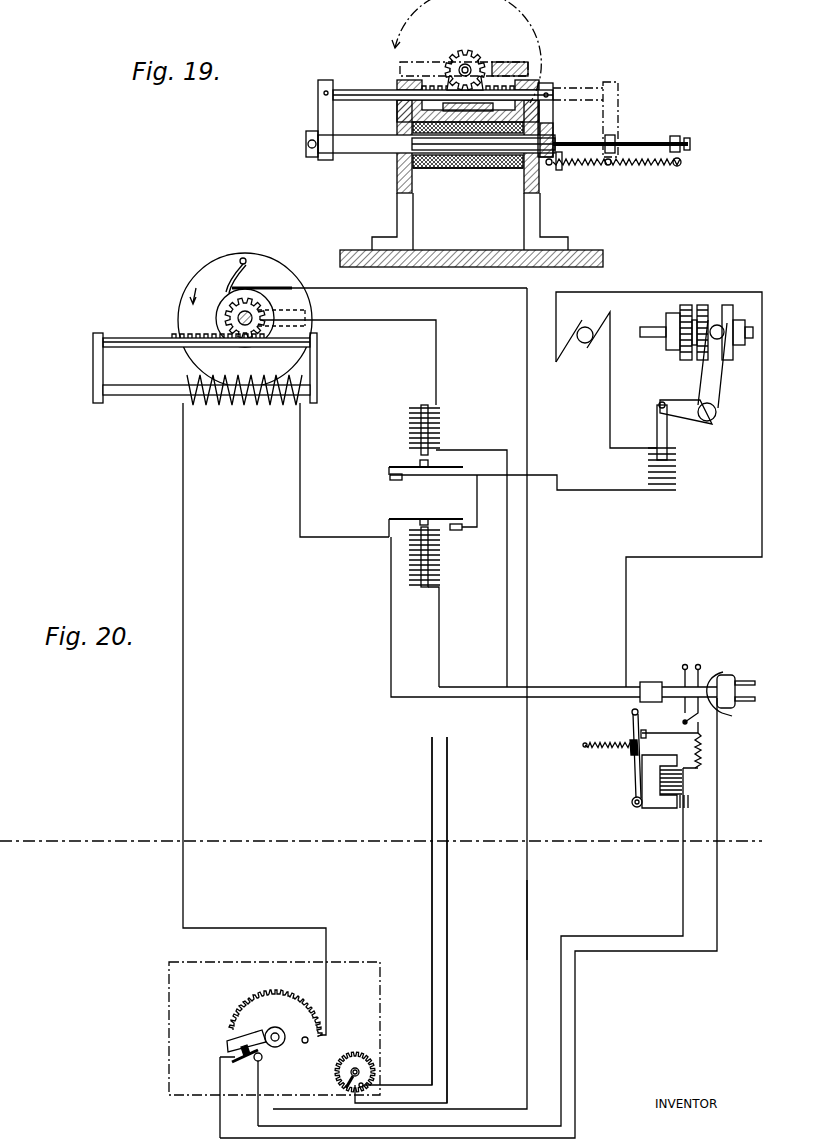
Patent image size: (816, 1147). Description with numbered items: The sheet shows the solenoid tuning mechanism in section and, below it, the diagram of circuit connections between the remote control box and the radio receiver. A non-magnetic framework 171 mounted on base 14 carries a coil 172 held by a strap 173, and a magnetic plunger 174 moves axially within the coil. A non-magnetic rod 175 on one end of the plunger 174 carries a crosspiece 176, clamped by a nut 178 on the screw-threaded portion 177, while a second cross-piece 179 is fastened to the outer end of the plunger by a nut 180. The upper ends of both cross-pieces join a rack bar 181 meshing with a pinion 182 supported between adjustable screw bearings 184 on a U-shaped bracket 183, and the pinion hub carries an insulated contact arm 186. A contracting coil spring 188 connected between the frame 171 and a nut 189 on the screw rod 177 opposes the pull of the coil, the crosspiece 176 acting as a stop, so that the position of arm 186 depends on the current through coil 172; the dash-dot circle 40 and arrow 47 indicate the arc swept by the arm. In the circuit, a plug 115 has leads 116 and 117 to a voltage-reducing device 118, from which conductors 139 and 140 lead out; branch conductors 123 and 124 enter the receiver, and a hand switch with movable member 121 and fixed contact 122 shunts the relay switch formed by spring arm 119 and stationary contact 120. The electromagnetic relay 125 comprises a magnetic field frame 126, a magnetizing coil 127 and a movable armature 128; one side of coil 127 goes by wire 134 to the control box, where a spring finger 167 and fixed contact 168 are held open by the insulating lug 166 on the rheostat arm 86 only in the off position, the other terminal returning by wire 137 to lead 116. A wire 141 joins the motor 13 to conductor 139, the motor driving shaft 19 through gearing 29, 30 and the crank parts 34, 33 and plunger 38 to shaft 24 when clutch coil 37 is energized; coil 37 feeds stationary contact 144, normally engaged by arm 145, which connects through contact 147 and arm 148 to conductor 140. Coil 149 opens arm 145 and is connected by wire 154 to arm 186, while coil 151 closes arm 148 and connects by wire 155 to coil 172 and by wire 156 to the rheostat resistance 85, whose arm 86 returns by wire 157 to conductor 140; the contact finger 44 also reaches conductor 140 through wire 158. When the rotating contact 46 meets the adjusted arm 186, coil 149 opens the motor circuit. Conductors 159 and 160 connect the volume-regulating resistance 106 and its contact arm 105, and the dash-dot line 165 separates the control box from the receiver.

In FIG. 19, the base 14 is at (493, 254).
In FIG. 19, the non-magnetic framework 171 is at (540, 84).
In FIG. 19, the coil 172 is at (470, 170).
In FIG. 20, the coil 172 is at (258, 405).
In FIG. 19, the strap 173 is at (430, 168).
In FIG. 19, the magnetic plunger 174 is at (358, 153).
In FIG. 20, the magnetic plunger 174 is at (148, 395).
In FIG. 19, the non-magnetic rod 175 is at (485, 170).
In FIG. 19, the crosspiece 176 is at (553, 117).
In FIG. 20, the crosspiece 176 is at (318, 371).
In FIG. 19, the screw-threaded portion 177 is at (592, 142).
In FIG. 19, the nut 178 is at (563, 165).
In FIG. 19, the second cross-piece 179 is at (318, 117).
In FIG. 20, the second cross-piece 179 is at (93, 377).
In FIG. 19, the nut 180 is at (310, 157).
In FIG. 19, the rack bar 181 is at (358, 88).
In FIG. 20, the rack bar 181 is at (120, 338).
In FIG. 19, the pinion 182 is at (466, 52).
In FIG. 20, the pinion 182 is at (228, 318).
In FIG. 19, the U-shaped bracket 183 is at (488, 103).
In FIG. 19, the adjustable screw bearings 184 is at (470, 80).
In FIG. 19, the contact arm 186 is at (440, 62).
In FIG. 20, the contact arm 186 is at (308, 305).
In FIG. 19, the contracting coil spring 188 is at (551, 168).
In FIG. 19, the nut 189 is at (640, 168).
In FIG. 19, the rotary member 40 is at (425, 15).
In FIG. 20, the rotary member 40 is at (212, 262).
In FIG. 20, the contact finger 44 is at (282, 287).
In FIG. 20, the rotating contact 46 is at (245, 258).
In FIG. 20, the direction arrow 47 is at (220, 282).
In FIG. 20, the wire 154 is at (390, 322).
In FIG. 20, the coil 149 is at (408, 428).
In FIG. 20, the movable contact arm 145 is at (392, 466).
In FIG. 20, the stationary switch contact 144 is at (390, 481).
In FIG. 20, the movable contact arm 148 is at (438, 518).
In FIG. 20, the stationary contact 147 is at (460, 531).
In FIG. 20, the coil 151 is at (440, 571).
In FIG. 20, the wire 155 is at (508, 604).
In FIG. 20, the wire 156 is at (186, 657).
In FIG. 20, the wire 157 is at (528, 912).
In FIG. 20, the wire 158 is at (528, 574).
In FIG. 20, the conductor 140 is at (470, 699).
In FIG. 20, the conductor 139 is at (598, 686).
In FIG. 20, the wire 141 is at (628, 590).
In FIG. 20, the motor 13 is at (584, 345).
In FIG. 20, the motor-driven shaft 19 is at (648, 340).
In FIG. 20, the gear 29 is at (682, 358).
In FIG. 20, the gear 30 is at (702, 360).
In FIG. 20, the crank pin 34 is at (717, 325).
In FIG. 20, the driving shaft 24 is at (750, 346).
In FIG. 20, the crank arm 33 is at (718, 402).
In FIG. 20, the plunger 38 is at (668, 441).
In FIG. 20, the clutch coil 37 is at (678, 472).
In FIG. 20, the voltage-reducing device 118 is at (646, 681).
In FIG. 20, the branch conductor 124 is at (687, 664).
In FIG. 20, the branch conductor 123 is at (702, 664).
In FIG. 20, the fixed contact 122 is at (684, 714).
In FIG. 20, the movable contact member 121 is at (700, 722).
In FIG. 20, the plug 115 is at (744, 682).
In FIG. 20, the lead 116 is at (735, 672).
In FIG. 20, the lead 117 is at (738, 713).
In FIG. 20, the wire 137 is at (720, 890).
In FIG. 20, the wire 134 is at (645, 936).
In FIG. 20, the movable arm 119 is at (630, 724).
In FIG. 20, the movable armature 128 is at (634, 775).
In FIG. 20, the stationary contact 120 is at (647, 736).
In FIG. 20, the electromagnetic relay 125 is at (648, 777).
In FIG. 20, the magnetic field frame 126 is at (650, 812).
In FIG. 20, the magnetizing coil 127 is at (680, 784).
In FIG. 20, the dividing line 165 is at (381, 826).
In FIG. 20, the rheostat resistance 85 is at (243, 1000).
In FIG. 20, the insulating lug 166 is at (262, 1028).
In FIG. 20, the rheostat arm 86 is at (226, 1046).
In FIG. 20, the fixed contact 168 is at (232, 1056).
In FIG. 20, the spring finger 167 is at (243, 1068).
In FIG. 20, the volume-regulating resistance 106 is at (358, 1052).
In FIG. 20, the contact arm 105 is at (338, 1076).
In FIG. 20, the conductor 159 is at (430, 922).
In FIG. 20, the conductor 160 is at (449, 936).